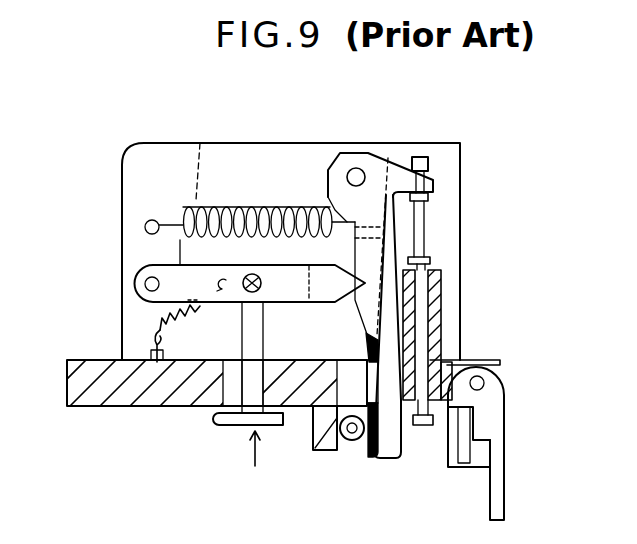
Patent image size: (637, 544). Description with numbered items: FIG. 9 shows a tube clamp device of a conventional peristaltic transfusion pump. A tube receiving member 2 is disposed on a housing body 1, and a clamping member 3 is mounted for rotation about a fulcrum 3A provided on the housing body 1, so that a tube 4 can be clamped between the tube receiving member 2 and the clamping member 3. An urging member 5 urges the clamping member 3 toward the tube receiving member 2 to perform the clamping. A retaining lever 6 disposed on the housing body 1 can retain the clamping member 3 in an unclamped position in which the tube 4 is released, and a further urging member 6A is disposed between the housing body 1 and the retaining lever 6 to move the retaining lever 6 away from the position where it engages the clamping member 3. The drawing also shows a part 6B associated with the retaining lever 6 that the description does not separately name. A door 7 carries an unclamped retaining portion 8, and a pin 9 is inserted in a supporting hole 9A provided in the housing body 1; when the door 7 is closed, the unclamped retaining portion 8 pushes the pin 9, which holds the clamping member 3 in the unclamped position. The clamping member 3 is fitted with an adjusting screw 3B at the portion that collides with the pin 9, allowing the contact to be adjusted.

The housing body 1 is at (103, 398).
The tube receiving member 2 is at (326, 449).
The clamping member 3 is at (390, 458).
The fulcrum 3A is at (362, 162).
The adjusting screw 3B is at (424, 157).
The tube 4 is at (349, 443).
The urging member 5 is at (236, 205).
The retaining lever 6 is at (216, 420).
The urging member 6A is at (168, 323).
The armature 6B is at (140, 276).
The door 7 is at (504, 500).
The unclamped retaining portion 8 is at (458, 458).
The pin 9 is at (430, 236).
The supporting hole 9A is at (436, 266).